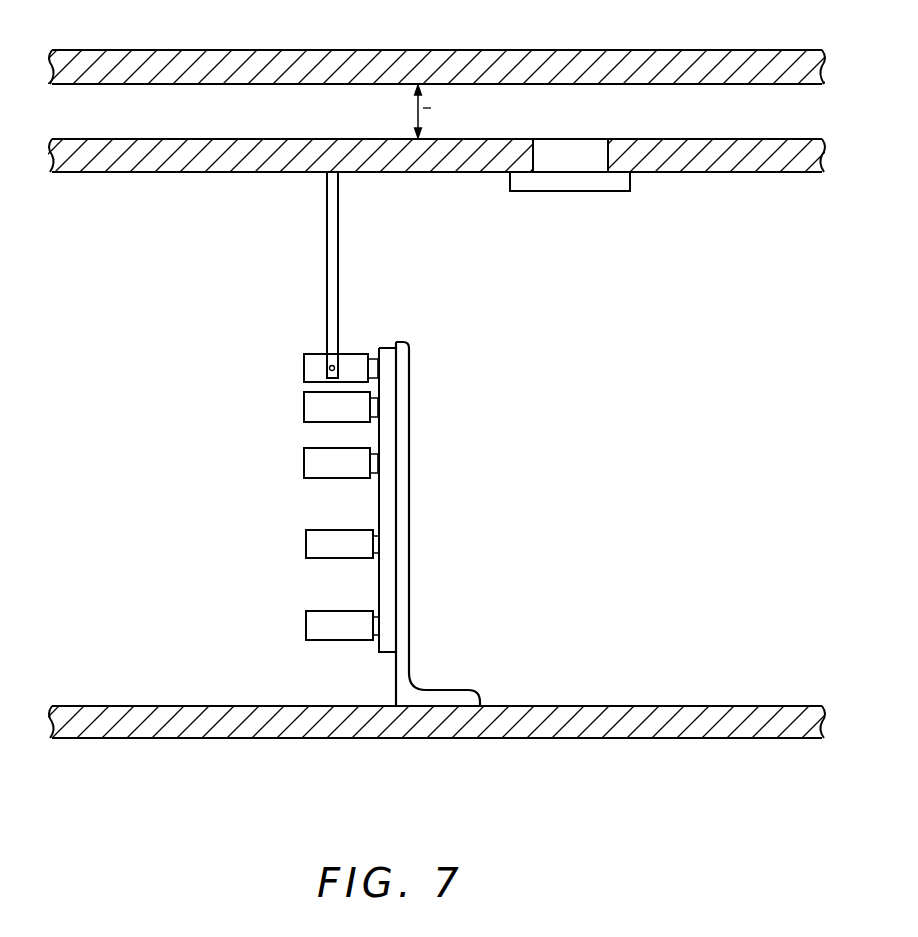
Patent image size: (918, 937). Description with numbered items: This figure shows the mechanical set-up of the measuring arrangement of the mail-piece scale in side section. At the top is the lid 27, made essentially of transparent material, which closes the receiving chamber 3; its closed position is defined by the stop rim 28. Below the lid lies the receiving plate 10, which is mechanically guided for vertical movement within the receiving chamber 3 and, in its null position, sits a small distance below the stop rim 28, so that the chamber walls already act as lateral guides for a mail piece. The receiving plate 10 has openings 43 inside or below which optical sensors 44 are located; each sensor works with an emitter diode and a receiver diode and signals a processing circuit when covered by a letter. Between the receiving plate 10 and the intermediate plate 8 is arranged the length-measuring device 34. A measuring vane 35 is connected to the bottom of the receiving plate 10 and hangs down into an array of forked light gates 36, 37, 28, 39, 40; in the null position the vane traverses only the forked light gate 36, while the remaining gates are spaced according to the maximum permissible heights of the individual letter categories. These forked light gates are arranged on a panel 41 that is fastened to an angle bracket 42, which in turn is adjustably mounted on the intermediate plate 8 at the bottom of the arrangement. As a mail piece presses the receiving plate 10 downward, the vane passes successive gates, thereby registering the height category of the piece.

The lid 27 is at (383, 63).
The receiving chamber 3 is at (250, 123).
The receiving plate 10 is at (230, 160).
The openings 43 is at (560, 157).
The optical sensors 44 is at (567, 180).
The measuring vane 35 is at (340, 283).
The forked light gate 36 is at (303, 367).
The forked light gate 37 is at (303, 409).
The stop rim 28 is at (303, 462).
The forked light gate 39 is at (304, 544).
The forked light gate 40 is at (305, 627).
The panel 41 is at (380, 503).
The angle bracket 42 is at (400, 493).
The length-measuring device 34 is at (207, 429).
The intermediate plate 8 is at (185, 716).